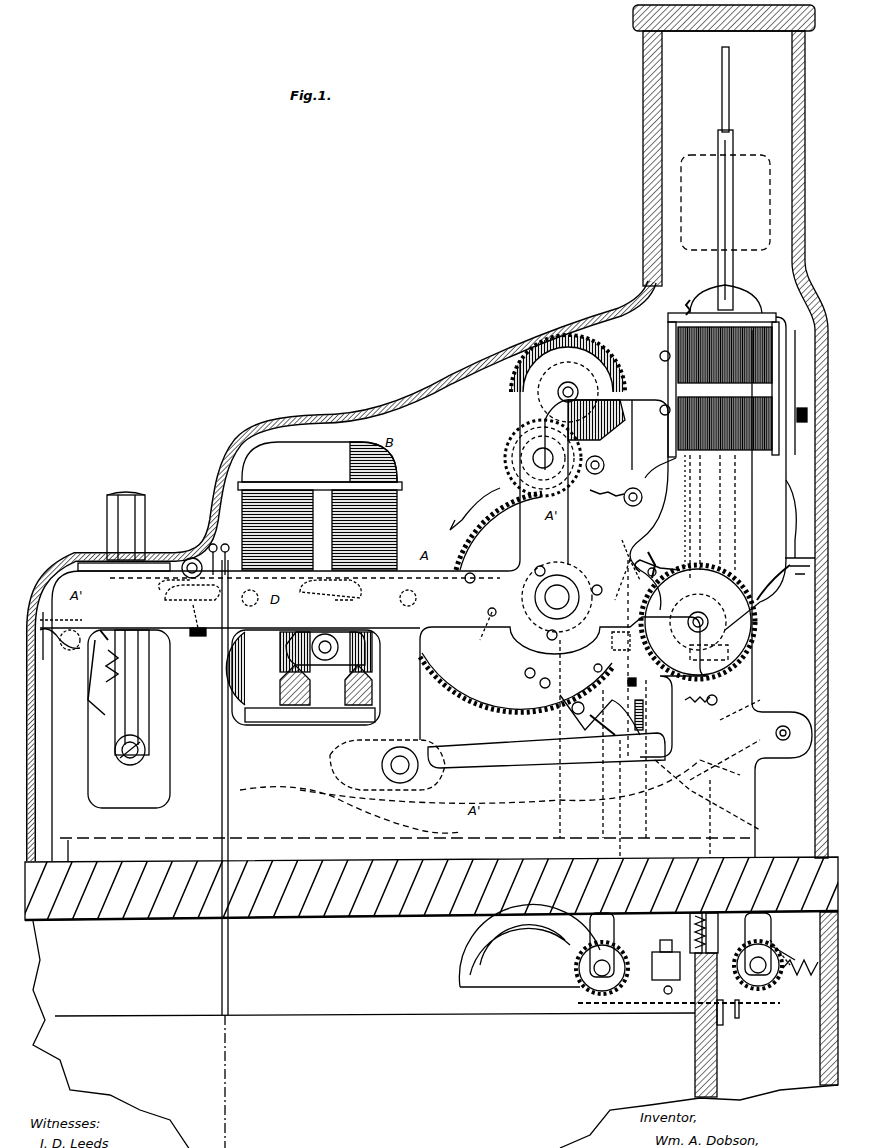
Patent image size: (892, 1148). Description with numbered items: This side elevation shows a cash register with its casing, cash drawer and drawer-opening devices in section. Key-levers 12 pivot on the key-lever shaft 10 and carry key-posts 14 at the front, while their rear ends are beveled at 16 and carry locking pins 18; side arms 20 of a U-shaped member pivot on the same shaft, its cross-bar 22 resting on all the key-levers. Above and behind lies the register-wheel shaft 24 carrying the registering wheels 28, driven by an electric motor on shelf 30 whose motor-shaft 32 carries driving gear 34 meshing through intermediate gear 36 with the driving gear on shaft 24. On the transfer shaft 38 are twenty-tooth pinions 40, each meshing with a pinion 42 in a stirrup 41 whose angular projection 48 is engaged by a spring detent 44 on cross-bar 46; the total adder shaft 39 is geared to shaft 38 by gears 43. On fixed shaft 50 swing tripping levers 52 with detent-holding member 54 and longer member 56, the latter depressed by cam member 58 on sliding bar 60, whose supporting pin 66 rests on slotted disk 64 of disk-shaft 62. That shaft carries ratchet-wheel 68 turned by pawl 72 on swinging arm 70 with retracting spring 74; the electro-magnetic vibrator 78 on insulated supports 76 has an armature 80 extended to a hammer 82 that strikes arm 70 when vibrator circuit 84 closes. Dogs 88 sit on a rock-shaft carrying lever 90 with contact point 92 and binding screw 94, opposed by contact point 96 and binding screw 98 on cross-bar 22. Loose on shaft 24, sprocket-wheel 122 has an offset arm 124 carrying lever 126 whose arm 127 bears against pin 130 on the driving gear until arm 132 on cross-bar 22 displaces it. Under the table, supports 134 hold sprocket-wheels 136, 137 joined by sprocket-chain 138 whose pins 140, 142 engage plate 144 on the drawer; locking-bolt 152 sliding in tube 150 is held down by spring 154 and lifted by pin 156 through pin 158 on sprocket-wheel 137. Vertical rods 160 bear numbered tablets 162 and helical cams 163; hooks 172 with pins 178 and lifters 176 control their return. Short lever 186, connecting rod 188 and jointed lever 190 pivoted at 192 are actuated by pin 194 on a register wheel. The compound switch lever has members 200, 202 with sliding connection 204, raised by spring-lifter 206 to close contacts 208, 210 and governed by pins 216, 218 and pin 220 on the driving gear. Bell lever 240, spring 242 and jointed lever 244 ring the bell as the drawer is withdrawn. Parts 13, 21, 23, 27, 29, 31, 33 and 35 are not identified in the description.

The key-lever shaft 10 is at (384, 762).
The key-levers 12 is at (141, 750).
The link 13 is at (315, 808).
The key-posts 14 is at (132, 692).
The beveled lifting point 16 is at (745, 775).
The locking up pins 18 is at (748, 790).
The side arms 20 is at (508, 735).
The spring 21 is at (118, 655).
The cross-bar 22 is at (651, 714).
The pin 23 is at (114, 626).
The register-wheel shaft 24 is at (565, 588).
The spring 27 is at (88, 690).
The registering wheels 28 is at (496, 529).
The post 29 is at (44, 647).
The shelf 30 is at (300, 724).
The contact 31 is at (60, 656).
The motor-shaft 32 is at (270, 662).
The contact 33 is at (80, 630).
The driving gear 34 is at (320, 640).
The pin 35 is at (61, 611).
The intermediate gear 36 is at (516, 672).
The transfer shaft 38 is at (533, 458).
The total adder shaft 39 is at (558, 392).
The twenty-tooth pinions 40 is at (512, 470).
The stirrup 41 is at (520, 440).
The twenty-tooth pinion 42 is at (596, 424).
The gears 43 is at (530, 372).
The spring detent 44 is at (650, 412).
The cross-bar 46 is at (655, 358).
The angular projection 48 is at (645, 435).
The fixed shaft 50 is at (640, 494).
The tripping levers 52 is at (629, 559).
The detent-holding member 54 is at (602, 505).
The longer member 56 is at (650, 540).
The cam member 58 is at (692, 478).
The vertically sliding bar 60 is at (690, 523).
The disk-shaft 62 is at (710, 608).
The slotted disks 64 is at (784, 630).
The supporting pins 66 is at (650, 582).
The ratchet-wheel 68 is at (773, 585).
The swinging arm 70 is at (680, 627).
The pawl 72 is at (656, 556).
The retracting spring 74 is at (699, 708).
The supports 76 is at (745, 318).
The electro-magnetic vibrator 78 is at (788, 330).
The vibrating armature 80 is at (790, 372).
The hammer 82 is at (711, 652).
The vibrator circuit 84 is at (660, 470).
The dogs 88 is at (700, 670).
The forwardly extending lever 90 is at (594, 667).
The contact point 92 is at (643, 686).
The binding screw 94 is at (621, 628).
The contact-point 96 is at (600, 714).
The binding screw 98 is at (640, 759).
The sprocket-wheel 122 is at (545, 560).
The offset arm 124 is at (544, 639).
The lever 126 is at (544, 673).
The arm 127 is at (627, 580).
The pin 130 is at (602, 581).
The projecting arm 132 is at (601, 726).
The supports 134 is at (681, 945).
The sprocket-wheel 136 is at (605, 995).
The sprocket-wheel 137 is at (768, 990).
The sprocket-chain 138 is at (640, 1006).
The pin 140 is at (639, 799).
The pin 142 is at (747, 1016).
The plate 144 is at (735, 1024).
The tube 150 is at (683, 893).
The locking-bolt 152 is at (695, 1025).
The spring 154 is at (710, 819).
The pin 156 is at (785, 939).
The pin 158 is at (792, 944).
The vertical rods 160 is at (738, 510).
The numbered tablets 162 is at (729, 68).
The helical cam 163 is at (752, 700).
The hooks 172 is at (802, 695).
The lifters 176 is at (809, 760).
The pin 178 is at (771, 731).
The short lever 186 is at (775, 830).
The connecting rod 188 is at (590, 764).
The jointed lever 190 is at (536, 739).
The pivot 192 is at (500, 796).
The pin 194 is at (539, 683).
The switch lever member 200 is at (192, 594).
The switch lever member 202 is at (329, 593).
The sliding connection 204 is at (340, 598).
The spring-lifter 206 is at (182, 626).
The contact point 208 is at (174, 580).
The contact point 210 is at (200, 560).
The pin 216 is at (487, 574).
The pin 218 is at (492, 633).
The pin 220 is at (505, 616).
The bell lever 240 is at (666, 960).
The spring 242 is at (800, 980).
The jointed lever 244 is at (680, 1004).